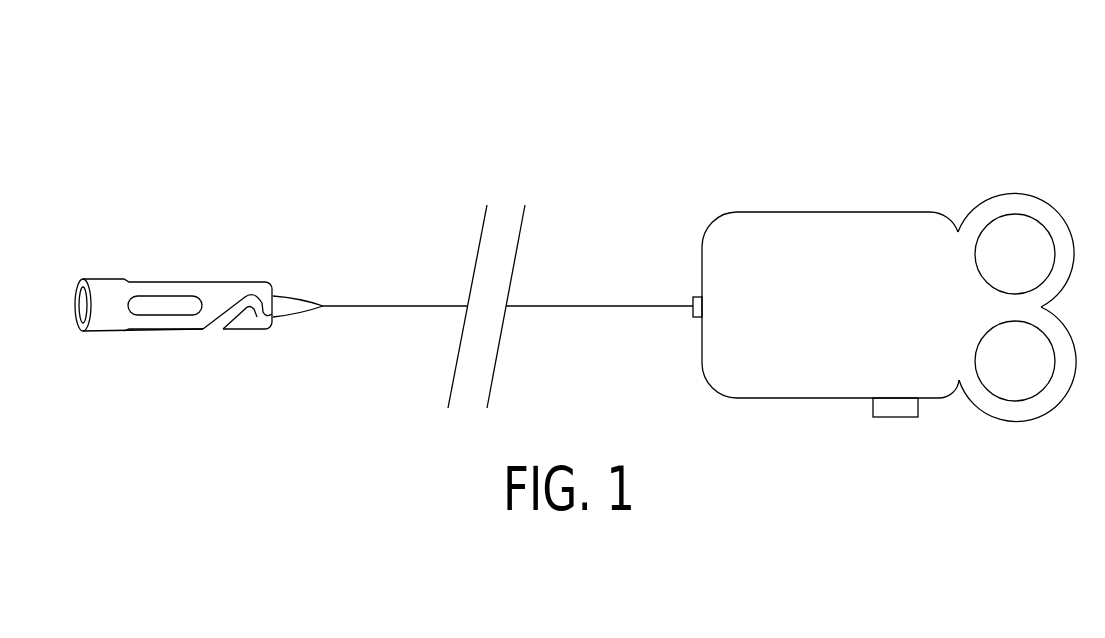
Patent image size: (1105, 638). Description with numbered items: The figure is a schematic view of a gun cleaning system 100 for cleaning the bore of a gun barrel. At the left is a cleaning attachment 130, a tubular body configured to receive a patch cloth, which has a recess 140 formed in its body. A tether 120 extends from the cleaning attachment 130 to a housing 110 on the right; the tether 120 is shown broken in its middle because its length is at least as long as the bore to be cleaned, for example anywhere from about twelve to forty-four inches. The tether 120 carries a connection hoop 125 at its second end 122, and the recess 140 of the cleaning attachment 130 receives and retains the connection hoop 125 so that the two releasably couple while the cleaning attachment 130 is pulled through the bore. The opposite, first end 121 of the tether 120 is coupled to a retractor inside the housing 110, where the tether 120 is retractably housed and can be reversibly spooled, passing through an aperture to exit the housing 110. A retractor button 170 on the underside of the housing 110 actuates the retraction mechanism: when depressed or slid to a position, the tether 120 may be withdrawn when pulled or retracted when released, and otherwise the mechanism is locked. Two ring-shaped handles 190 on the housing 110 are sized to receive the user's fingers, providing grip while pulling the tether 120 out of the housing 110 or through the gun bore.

The gun cleaning system 100 is at (690, 152).
The housing 110 is at (755, 372).
The tether 120 is at (457, 306).
The first end 121 is at (676, 305).
The second end 122 is at (301, 340).
The connection hoop 125 is at (290, 296).
The cleaning attachment 130 is at (215, 297).
The recess 140 is at (246, 334).
The retractor button 170 is at (895, 408).
The handles 190 is at (1013, 205).